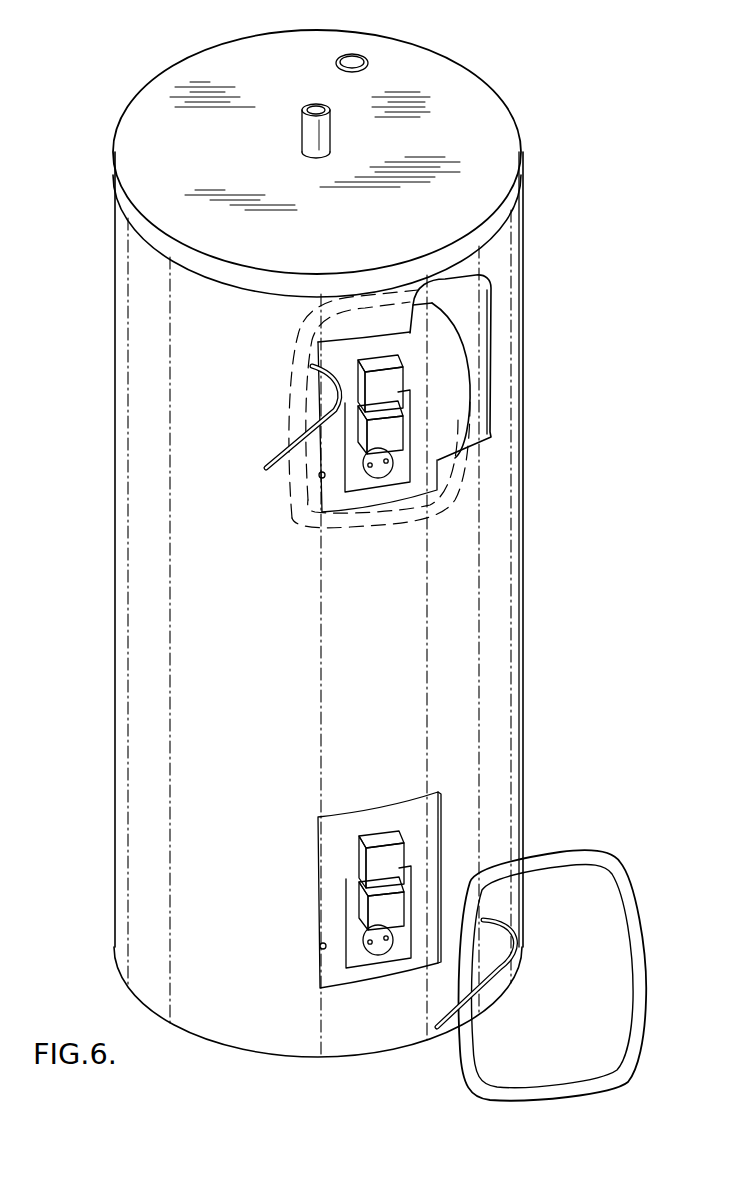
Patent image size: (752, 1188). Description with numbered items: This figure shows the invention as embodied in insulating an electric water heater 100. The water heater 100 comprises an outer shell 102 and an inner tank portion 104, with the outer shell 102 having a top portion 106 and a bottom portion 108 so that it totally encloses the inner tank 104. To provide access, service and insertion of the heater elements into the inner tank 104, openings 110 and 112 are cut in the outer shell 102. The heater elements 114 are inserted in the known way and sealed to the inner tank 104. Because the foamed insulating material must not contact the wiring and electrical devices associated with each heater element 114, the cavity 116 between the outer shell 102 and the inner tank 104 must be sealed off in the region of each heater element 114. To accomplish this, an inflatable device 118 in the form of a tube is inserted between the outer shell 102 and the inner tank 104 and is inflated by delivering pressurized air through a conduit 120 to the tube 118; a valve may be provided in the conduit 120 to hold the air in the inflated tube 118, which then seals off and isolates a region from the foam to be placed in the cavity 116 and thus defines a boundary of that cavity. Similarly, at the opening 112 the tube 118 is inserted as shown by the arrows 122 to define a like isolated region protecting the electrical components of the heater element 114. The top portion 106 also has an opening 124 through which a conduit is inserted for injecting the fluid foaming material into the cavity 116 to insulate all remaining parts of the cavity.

The electric water heater 100 is at (530, 634).
The outer shell 102 is at (512, 383).
The inner tank portion 104 is at (440, 367).
The top portion 106 is at (457, 115).
The bottom portion 108 is at (172, 1025).
The opening 110 is at (322, 478).
The opening 112 is at (325, 946).
The heater elements 114 is at (377, 478).
The cavity 116 is at (478, 287).
The inflatable device 118 is at (478, 431).
The conduit 120 is at (290, 452).
The arrows 122 is at (330, 893).
The hole 124 is at (363, 55).